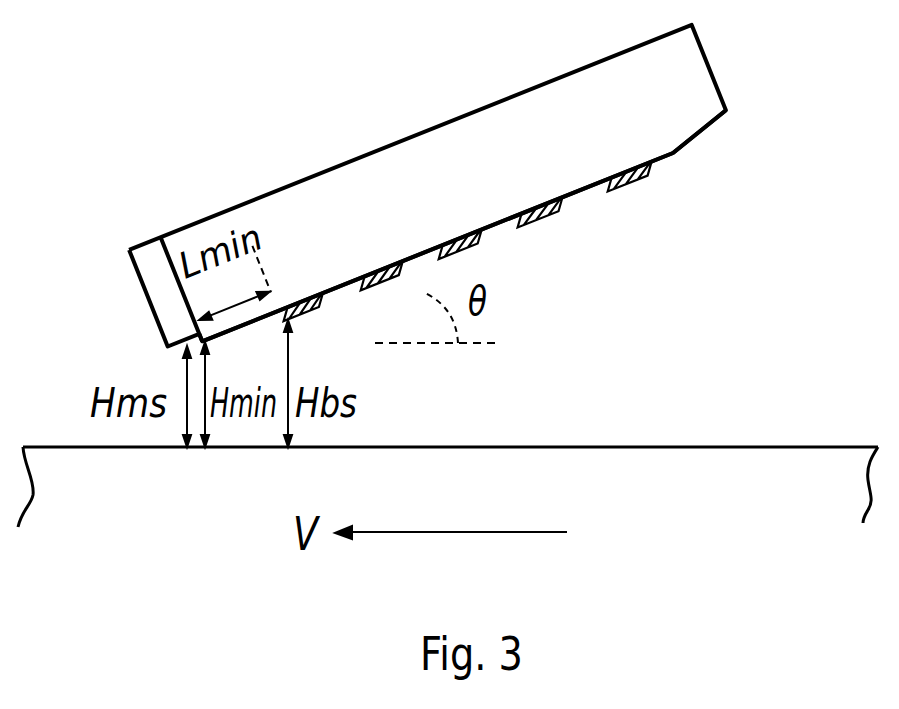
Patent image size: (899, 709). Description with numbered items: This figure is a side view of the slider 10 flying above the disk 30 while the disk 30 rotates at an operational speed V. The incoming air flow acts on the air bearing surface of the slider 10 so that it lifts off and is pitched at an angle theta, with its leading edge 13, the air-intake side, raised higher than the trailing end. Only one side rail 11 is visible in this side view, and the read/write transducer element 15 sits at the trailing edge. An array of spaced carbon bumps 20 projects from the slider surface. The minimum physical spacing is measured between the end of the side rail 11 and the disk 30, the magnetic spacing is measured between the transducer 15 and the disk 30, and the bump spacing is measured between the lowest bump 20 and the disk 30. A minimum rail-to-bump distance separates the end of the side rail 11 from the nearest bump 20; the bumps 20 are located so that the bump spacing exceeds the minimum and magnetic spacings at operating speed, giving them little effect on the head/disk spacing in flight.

The slider 10 is at (427, 183).
The side rail 11 is at (578, 192).
The leading edge 13 is at (698, 133).
The read/write transducer element 15 is at (180, 313).
The bumps 20 is at (633, 182).
The disk 30 is at (448, 487).